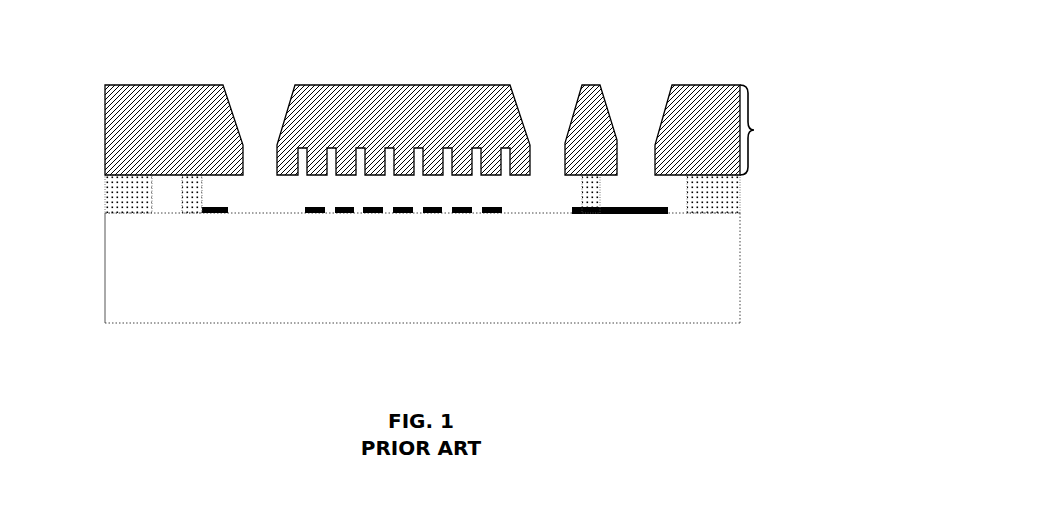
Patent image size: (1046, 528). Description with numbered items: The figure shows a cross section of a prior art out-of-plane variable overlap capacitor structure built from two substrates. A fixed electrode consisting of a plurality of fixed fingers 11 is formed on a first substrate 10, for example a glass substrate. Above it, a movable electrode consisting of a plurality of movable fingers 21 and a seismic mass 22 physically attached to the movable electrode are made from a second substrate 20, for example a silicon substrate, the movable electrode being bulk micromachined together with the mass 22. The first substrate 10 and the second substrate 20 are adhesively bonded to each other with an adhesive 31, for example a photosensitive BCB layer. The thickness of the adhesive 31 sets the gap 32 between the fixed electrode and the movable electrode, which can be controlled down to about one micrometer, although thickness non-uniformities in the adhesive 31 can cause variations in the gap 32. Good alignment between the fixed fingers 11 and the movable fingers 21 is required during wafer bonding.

The first substrate 10 is at (422, 268).
The fixed fingers 11 is at (317, 215).
The second substrate 20 is at (450, 100).
The movable fingers 21 is at (318, 157).
The seismic mass 22 is at (404, 141).
The adhesive 31 is at (188, 200).
The gap 32 is at (347, 178).